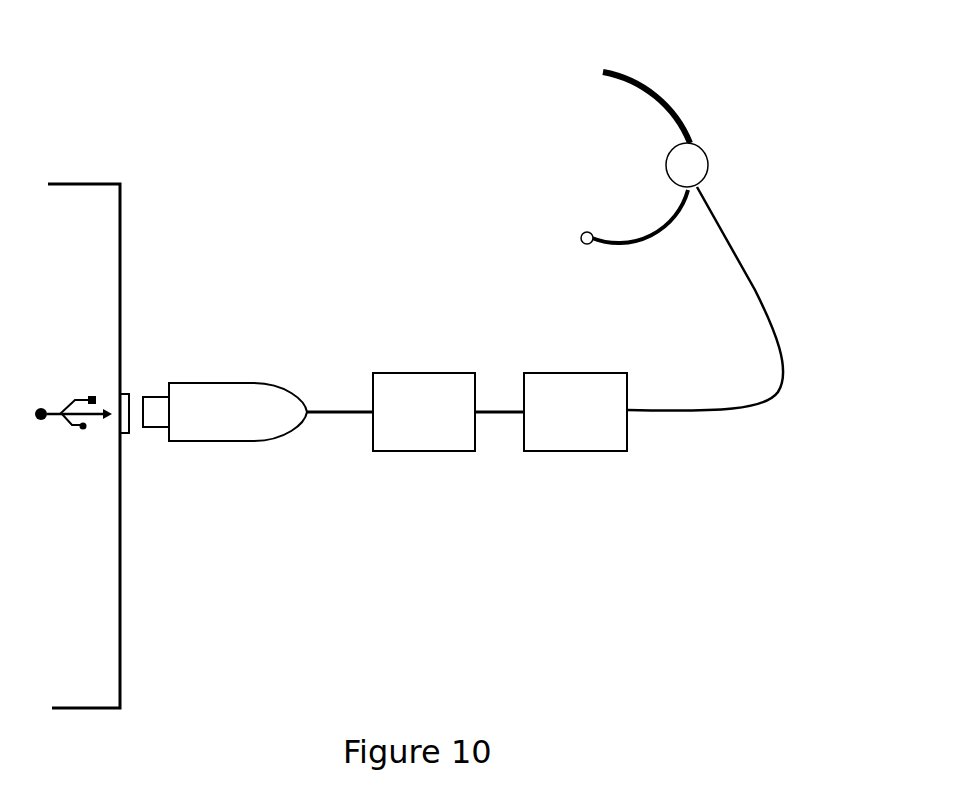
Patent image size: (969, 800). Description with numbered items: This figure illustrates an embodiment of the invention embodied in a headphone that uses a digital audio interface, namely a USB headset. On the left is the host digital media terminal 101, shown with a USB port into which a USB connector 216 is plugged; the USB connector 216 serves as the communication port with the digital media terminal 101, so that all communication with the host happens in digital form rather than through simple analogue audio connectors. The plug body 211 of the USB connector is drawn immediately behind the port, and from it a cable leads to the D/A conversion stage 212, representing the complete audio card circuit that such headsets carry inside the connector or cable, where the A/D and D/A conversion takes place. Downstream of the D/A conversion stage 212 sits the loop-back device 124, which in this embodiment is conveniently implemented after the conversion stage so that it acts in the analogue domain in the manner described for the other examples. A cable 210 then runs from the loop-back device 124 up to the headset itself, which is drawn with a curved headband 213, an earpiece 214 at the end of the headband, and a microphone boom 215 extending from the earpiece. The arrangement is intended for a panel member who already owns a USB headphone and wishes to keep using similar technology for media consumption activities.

The digital media terminal 101 is at (66, 175).
The USB connector 216 is at (127, 390).
The USB connector / plug 211 is at (272, 447).
The D/A conversion stage 212 is at (447, 458).
The loop-back device 124 is at (605, 459).
The headset cable 210 is at (767, 423).
The headband 213 is at (655, 84).
The earpiece / speaker 214 is at (710, 153).
The microphone 215 is at (595, 222).